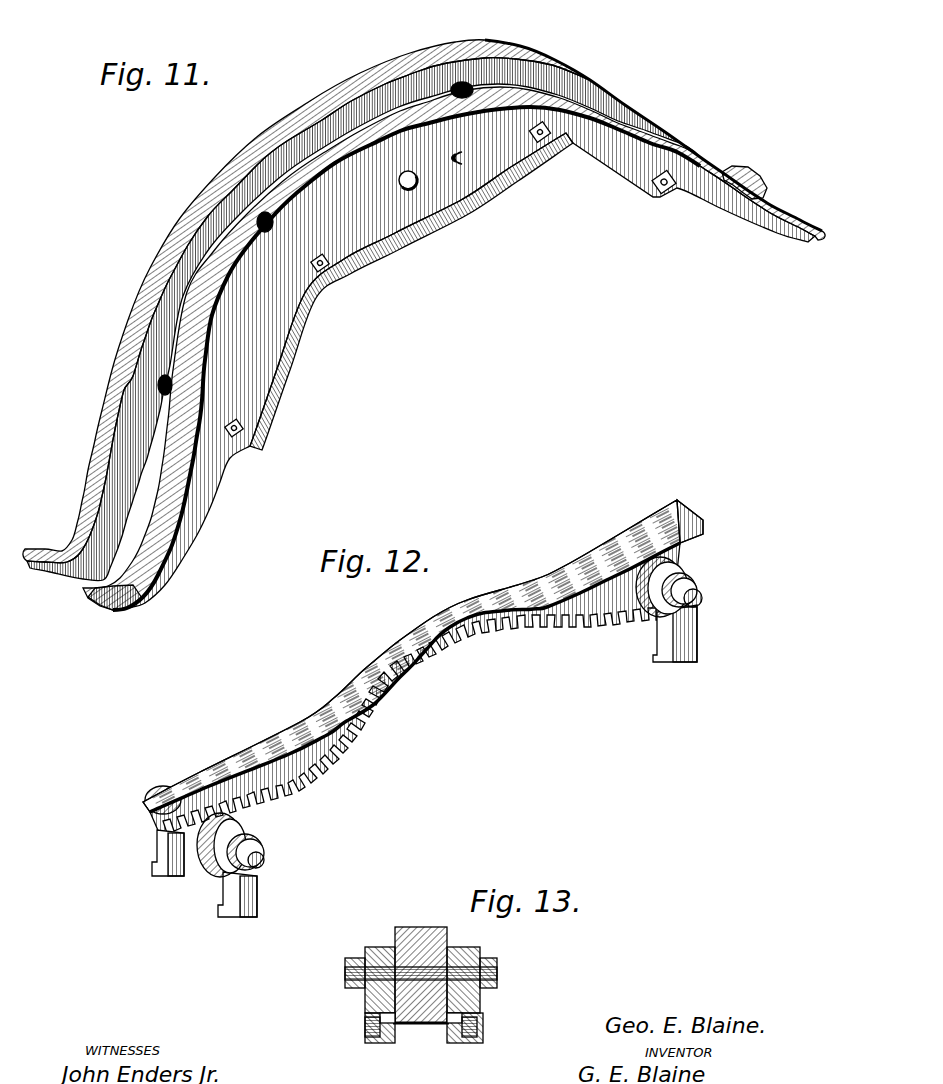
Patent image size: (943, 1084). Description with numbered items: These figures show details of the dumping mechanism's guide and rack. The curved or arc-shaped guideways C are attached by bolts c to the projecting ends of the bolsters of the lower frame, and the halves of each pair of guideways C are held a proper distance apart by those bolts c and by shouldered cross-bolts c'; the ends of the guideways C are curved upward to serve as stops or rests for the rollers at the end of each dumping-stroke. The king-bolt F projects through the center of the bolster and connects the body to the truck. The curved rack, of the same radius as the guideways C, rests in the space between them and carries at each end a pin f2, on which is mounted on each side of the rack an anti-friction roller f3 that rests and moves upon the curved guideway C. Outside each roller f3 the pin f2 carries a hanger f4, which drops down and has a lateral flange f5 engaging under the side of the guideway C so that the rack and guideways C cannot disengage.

In FIG. 11, the bolt c is at (450, 299).
In FIG. 11, the shouldered cross-bolt c' is at (424, 316).
In FIG. 12, the king-bolt F is at (476, 670).
In FIG. 13, the king-bolt F is at (428, 1037).
In FIG. 13, the pin f2 is at (345, 972).
In FIG. 12, the anti-friction roller f3 is at (158, 850).
In FIG. 13, the anti-friction roller f3 is at (422, 967).
In FIG. 12, the hanger f4 is at (263, 843).
In FIG. 13, the hanger f4 is at (355, 988).
In FIG. 12, the lateral flange f5 is at (168, 876).
In FIG. 13, the lateral flange f5 is at (362, 1022).
In FIG. 13, the curved guideway C is at (421, 1041).